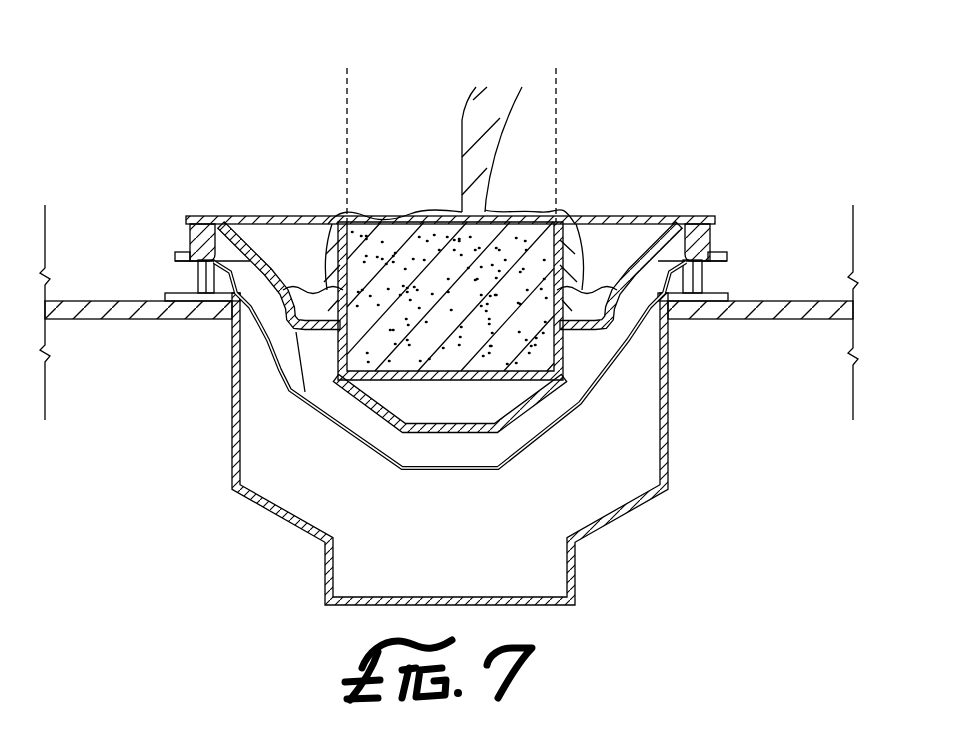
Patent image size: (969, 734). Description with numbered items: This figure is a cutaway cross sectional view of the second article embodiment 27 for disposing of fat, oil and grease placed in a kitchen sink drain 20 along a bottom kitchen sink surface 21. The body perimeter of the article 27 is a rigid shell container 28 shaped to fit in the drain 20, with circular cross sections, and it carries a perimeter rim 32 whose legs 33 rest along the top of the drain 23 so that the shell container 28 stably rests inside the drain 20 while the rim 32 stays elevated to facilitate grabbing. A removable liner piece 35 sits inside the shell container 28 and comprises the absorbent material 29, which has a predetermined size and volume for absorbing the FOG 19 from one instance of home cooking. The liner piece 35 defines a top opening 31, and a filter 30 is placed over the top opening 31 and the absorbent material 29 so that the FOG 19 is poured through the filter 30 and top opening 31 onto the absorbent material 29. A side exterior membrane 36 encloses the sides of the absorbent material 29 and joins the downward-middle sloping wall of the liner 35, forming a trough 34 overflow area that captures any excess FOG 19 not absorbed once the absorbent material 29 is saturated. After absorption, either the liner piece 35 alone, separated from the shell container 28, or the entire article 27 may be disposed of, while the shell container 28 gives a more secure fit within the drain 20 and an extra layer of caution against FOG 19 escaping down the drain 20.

The FOG 19 is at (480, 127).
The drain 20 is at (232, 432).
The bottom kitchen sink surface 21 is at (99, 300).
The top of the drain 23 is at (210, 301).
The second article embodiment 27 is at (592, 120).
The shell container 28 is at (578, 405).
The absorbent material 29 is at (417, 262).
The filter 30 is at (303, 216).
The top opening 31 is at (556, 73).
The perimeter rim 32 is at (718, 275).
The legs 33 is at (687, 300).
The trough 34 is at (278, 237).
The liner piece 35 is at (345, 372).
The side exterior membrane 36 is at (583, 292).